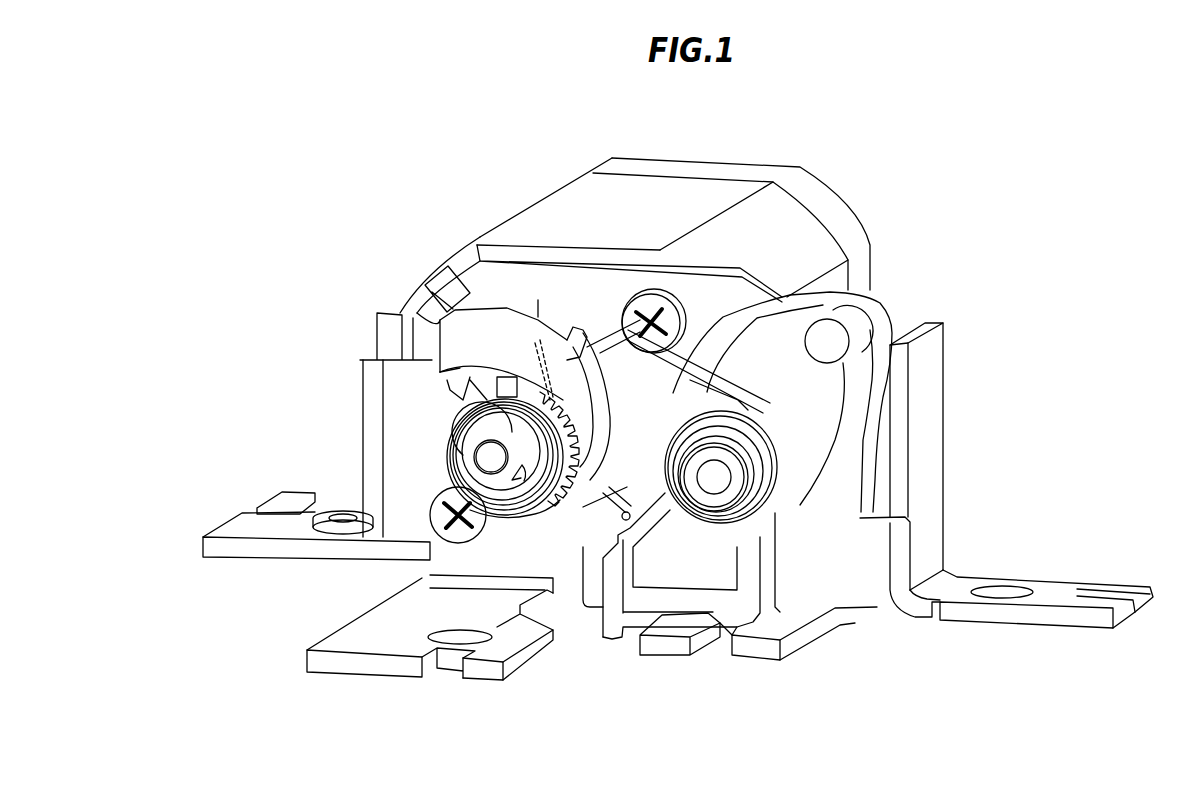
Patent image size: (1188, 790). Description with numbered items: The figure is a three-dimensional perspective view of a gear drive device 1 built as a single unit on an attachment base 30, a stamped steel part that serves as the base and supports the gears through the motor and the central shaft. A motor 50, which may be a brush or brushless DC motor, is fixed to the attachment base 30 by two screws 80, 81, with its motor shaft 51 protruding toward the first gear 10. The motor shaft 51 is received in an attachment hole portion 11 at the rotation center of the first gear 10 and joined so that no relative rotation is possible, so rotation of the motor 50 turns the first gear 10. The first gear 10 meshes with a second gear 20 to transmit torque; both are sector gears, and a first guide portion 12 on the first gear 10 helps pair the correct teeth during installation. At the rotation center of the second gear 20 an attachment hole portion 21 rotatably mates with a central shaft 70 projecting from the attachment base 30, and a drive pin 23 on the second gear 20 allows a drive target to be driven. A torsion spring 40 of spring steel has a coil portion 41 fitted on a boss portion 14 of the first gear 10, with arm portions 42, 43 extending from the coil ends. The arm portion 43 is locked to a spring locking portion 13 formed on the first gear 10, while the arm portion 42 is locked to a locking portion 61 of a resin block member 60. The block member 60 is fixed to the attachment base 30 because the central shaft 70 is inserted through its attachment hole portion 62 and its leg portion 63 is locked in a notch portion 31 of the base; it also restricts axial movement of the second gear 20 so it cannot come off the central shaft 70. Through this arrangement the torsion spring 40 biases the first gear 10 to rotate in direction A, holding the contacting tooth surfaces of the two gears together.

The gear drive device 1 is at (928, 98).
The first gear 10 is at (543, 520).
The attachment hole portion 11 is at (478, 455).
The first guide portion 12 is at (452, 392).
The spring locking portion 13 is at (453, 327).
The boss portion 14 is at (447, 373).
The second gear 20 is at (855, 417).
The attachment hole portion 21 is at (733, 470).
The drive pin 23 is at (835, 332).
The attachment base 30 is at (790, 623).
The notch portion 31 is at (678, 650).
The torsion spring 40 is at (445, 433).
The coil portion 41 is at (447, 437).
The arm portion 42 is at (622, 502).
The arm portion 43 is at (545, 343).
The motor 50 is at (510, 233).
The motor shaft 51 is at (487, 473).
The block member 60 is at (672, 573).
The locking portion 61 is at (587, 468).
The attachment hole portion 62 is at (688, 505).
The leg portion 63 is at (725, 630).
The central shaft 70 is at (717, 495).
The screw 80 is at (677, 297).
The screw 81 is at (438, 540).
The direction A is at (517, 503).